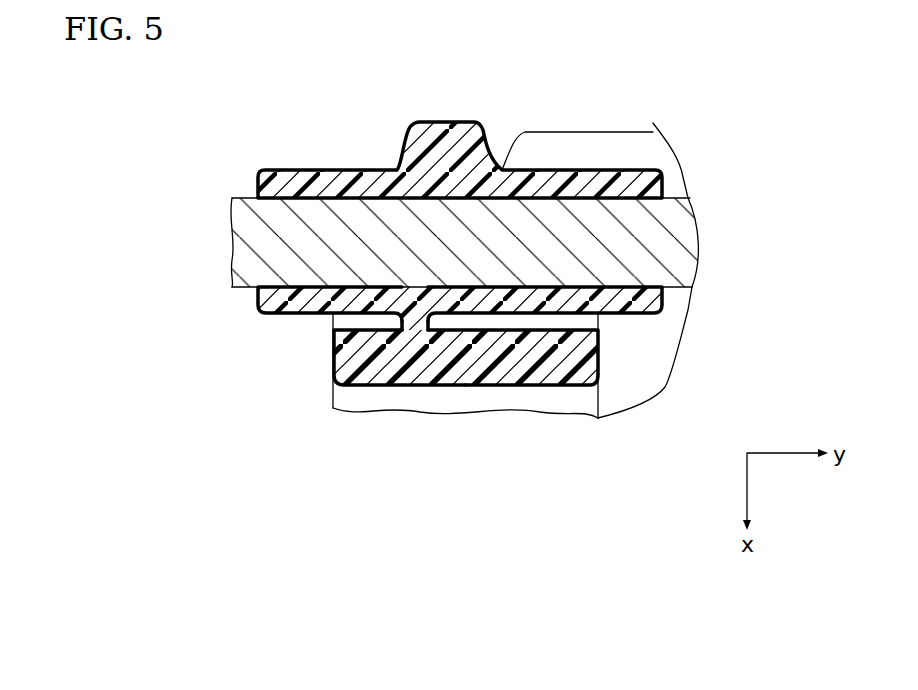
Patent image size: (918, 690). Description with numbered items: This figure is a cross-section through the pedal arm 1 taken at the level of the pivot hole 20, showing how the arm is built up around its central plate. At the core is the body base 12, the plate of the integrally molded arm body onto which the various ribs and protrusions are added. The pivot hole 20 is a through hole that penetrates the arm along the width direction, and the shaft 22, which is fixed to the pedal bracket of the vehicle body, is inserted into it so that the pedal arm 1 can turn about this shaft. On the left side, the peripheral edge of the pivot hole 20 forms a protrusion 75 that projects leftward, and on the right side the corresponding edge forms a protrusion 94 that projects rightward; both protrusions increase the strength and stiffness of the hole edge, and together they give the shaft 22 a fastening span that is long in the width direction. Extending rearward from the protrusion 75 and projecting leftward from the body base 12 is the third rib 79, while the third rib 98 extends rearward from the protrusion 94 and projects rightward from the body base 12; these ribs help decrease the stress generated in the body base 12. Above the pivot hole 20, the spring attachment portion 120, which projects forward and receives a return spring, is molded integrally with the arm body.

The pedal arm 1 is at (556, 85).
The body base 12 is at (412, 318).
The pivot hole 20 is at (636, 272).
The shaft 22 is at (246, 217).
The protrusion 75 is at (258, 300).
The third rib 79 is at (352, 348).
The protrusion 94 is at (633, 309).
The third rib 98 is at (584, 352).
The spring attachment portion 120 is at (441, 110).